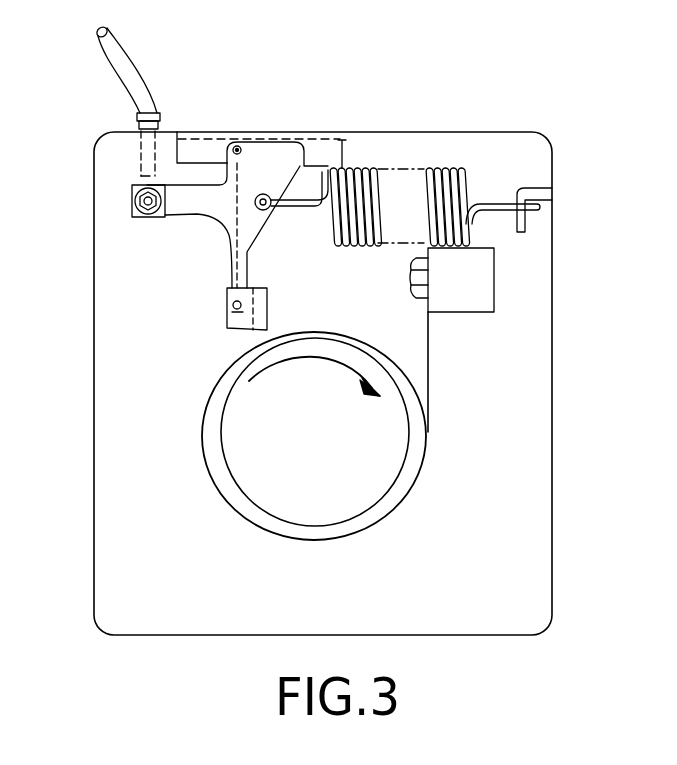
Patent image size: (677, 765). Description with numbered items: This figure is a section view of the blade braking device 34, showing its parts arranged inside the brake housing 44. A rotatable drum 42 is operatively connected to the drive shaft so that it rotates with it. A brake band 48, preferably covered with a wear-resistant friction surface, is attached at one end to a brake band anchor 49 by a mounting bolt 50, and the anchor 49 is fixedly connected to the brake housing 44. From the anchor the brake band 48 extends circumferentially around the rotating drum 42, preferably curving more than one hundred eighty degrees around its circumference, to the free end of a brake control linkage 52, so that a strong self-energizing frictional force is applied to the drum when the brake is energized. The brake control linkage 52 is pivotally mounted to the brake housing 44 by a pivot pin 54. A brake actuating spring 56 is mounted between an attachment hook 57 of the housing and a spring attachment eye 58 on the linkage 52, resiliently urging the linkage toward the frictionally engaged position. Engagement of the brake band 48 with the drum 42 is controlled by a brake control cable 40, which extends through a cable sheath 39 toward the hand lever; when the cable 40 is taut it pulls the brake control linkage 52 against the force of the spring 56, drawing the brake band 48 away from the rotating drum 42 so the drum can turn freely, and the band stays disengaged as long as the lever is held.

The blade braking device 34 is at (577, 377).
The cable sheath 39 is at (136, 56).
The brake control cable 40 is at (147, 178).
The rotatable drum 42 is at (368, 493).
The brake housing 44 is at (552, 580).
The brake band 48 is at (428, 441).
The brake band anchor 49 is at (458, 305).
The mounting bolt 50 is at (426, 302).
The brake control linkage 52 is at (190, 210).
The pivot pin 54 is at (238, 149).
The brake actuating spring 56 is at (434, 168).
The attachment hook 57 is at (533, 191).
The spring attachment eye 58 is at (266, 210).